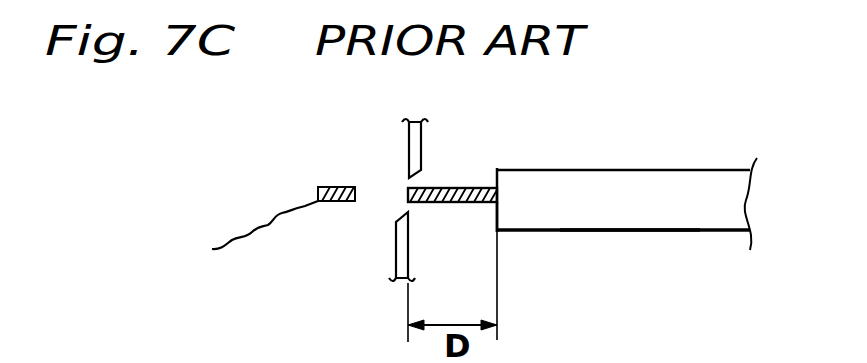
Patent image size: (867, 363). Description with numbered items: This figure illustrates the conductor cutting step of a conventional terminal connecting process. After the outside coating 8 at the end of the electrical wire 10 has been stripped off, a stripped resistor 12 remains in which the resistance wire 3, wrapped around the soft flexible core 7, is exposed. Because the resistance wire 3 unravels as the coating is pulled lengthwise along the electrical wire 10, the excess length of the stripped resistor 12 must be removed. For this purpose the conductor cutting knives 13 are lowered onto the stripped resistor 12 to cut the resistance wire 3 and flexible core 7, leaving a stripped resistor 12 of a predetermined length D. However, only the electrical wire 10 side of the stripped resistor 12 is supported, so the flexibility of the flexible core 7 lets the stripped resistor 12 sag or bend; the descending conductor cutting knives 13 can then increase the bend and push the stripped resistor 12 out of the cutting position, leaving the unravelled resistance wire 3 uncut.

The resistance wire 3 is at (258, 225).
The flexible core 7 is at (442, 190).
The outside coating 8 is at (643, 182).
The electrical wire 10 is at (624, 232).
The stripped resistor 12 is at (480, 208).
The conductor cutting knives 13 is at (406, 162).